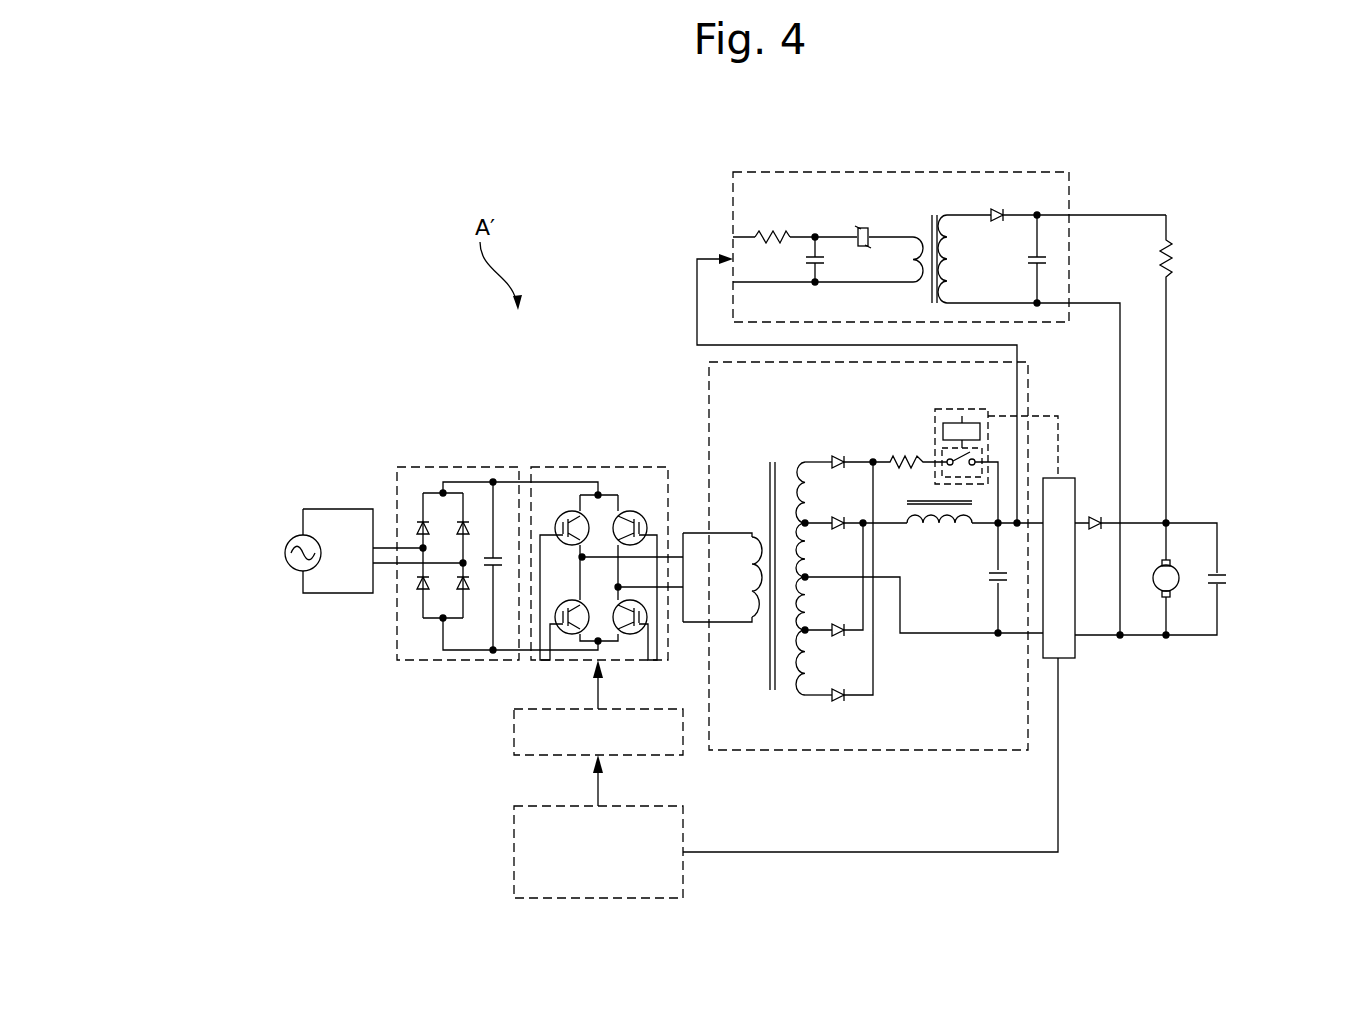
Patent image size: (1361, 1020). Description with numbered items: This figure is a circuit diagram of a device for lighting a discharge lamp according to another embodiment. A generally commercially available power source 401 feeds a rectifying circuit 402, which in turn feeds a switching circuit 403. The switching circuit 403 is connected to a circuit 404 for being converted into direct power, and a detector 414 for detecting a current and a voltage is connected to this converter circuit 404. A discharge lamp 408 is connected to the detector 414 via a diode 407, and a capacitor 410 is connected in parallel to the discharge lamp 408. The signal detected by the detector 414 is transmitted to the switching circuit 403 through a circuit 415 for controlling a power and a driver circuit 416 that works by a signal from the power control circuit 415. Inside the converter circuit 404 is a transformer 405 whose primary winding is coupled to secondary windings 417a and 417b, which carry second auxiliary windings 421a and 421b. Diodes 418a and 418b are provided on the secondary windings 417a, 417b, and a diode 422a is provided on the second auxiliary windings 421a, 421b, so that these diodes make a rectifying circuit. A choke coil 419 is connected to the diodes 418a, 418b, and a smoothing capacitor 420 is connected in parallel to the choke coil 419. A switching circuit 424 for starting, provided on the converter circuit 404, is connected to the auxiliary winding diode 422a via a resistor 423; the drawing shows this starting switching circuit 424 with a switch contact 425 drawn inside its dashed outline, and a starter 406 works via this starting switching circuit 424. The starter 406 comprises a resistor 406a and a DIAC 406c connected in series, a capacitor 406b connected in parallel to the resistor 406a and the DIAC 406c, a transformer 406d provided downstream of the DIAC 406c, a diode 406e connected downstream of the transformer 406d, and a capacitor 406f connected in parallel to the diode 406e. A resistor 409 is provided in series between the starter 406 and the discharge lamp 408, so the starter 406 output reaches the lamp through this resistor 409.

The power source 401 is at (285, 553).
The rectifying circuit 402 is at (420, 448).
The switching circuit 403 is at (555, 448).
The converter circuit 404 is at (686, 376).
The transformer 405 is at (716, 512).
The starter 406 is at (842, 172).
The resistor 406a is at (767, 229).
The capacitor 406b is at (813, 252).
The DIAC 406c is at (862, 226).
The transformer 406d is at (941, 200).
The diode 406e is at (1000, 207).
The capacitor 406f is at (1040, 252).
The diode 407 is at (1095, 513).
The discharge lamp 408 is at (1178, 583).
The resistor 409 is at (1175, 258).
The capacitor 410 is at (1226, 578).
The detector 414 is at (1075, 660).
The power control circuit 415 is at (514, 852).
The driver circuit 416 is at (514, 733).
The secondary winding 417a is at (770, 540).
The secondary winding 417b is at (770, 615).
The diode 418a is at (838, 517).
The diode 418b is at (843, 638).
The choke coil 419 is at (946, 543).
The smoothing capacitor 420 is at (978, 581).
The second auxiliary winding 421a is at (797, 448).
The second auxiliary winding 421b is at (793, 710).
The diode 422a is at (839, 450).
The resistor 423 is at (903, 454).
The switching circuit for starting 424 is at (928, 421).
The relay switch 425 is at (950, 423).